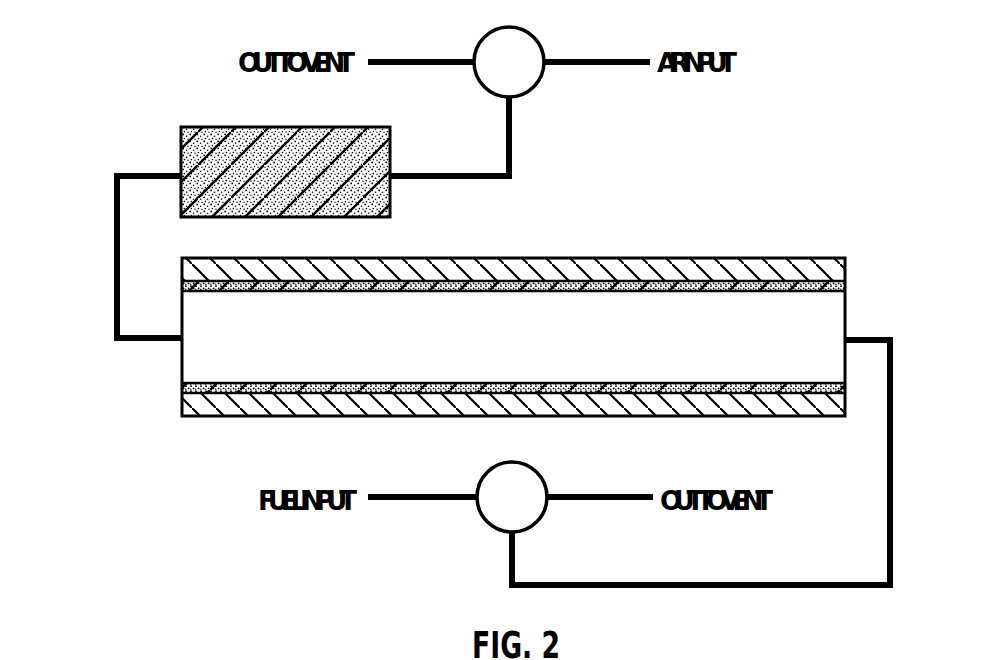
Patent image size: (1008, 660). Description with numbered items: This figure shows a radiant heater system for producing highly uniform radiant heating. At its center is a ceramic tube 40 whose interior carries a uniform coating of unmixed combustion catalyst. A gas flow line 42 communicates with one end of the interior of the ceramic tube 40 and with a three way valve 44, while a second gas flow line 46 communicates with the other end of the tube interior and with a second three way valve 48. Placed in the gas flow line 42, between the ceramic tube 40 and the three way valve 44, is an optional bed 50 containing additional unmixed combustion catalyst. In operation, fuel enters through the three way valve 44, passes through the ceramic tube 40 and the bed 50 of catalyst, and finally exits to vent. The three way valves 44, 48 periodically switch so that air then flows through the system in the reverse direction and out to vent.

The ceramic tube 40 is at (548, 258).
The gas flow line 42 is at (117, 282).
The three way valve 44 is at (492, 44).
The second gas flow line 46 is at (890, 462).
The second three way valve 48 is at (514, 468).
The bed 50 is at (212, 130).